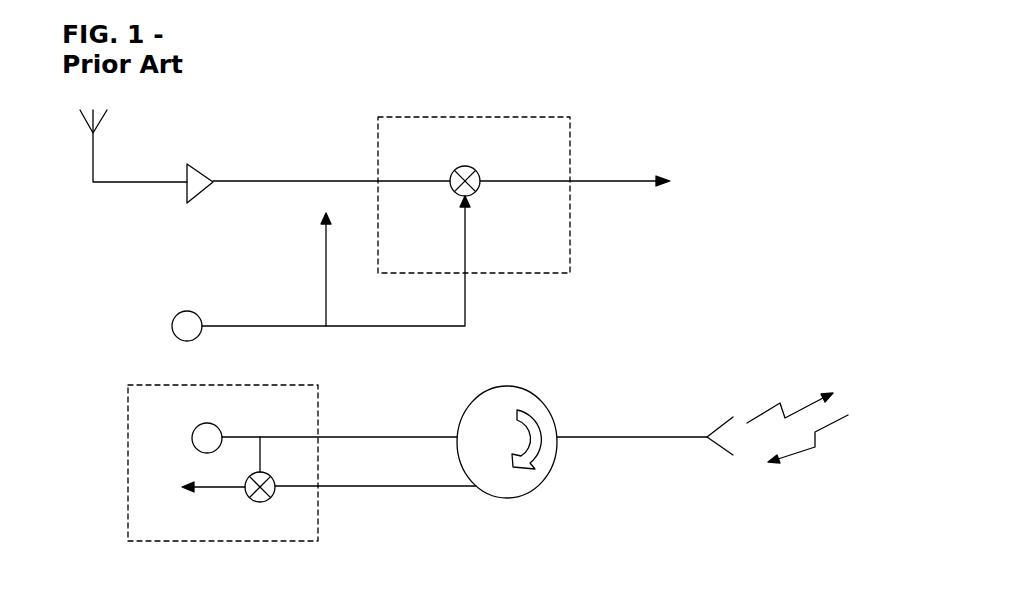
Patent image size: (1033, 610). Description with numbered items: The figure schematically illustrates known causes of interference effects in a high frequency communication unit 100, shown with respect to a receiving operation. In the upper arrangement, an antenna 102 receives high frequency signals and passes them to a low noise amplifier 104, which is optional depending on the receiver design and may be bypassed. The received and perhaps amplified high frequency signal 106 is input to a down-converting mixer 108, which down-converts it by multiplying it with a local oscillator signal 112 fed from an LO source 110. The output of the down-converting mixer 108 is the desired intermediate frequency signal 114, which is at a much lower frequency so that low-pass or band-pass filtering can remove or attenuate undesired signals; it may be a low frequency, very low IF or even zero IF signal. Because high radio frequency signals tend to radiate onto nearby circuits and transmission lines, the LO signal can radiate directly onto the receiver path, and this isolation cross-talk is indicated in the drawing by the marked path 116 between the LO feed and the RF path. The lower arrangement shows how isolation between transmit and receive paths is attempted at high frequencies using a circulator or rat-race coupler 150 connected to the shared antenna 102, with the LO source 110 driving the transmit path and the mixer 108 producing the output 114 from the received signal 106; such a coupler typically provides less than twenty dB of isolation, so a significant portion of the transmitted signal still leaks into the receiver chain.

The high frequency communication unit 100 is at (277, 66).
The antenna 102 is at (93, 158).
The low noise amplifier 104 is at (197, 165).
The high frequency signal 106 is at (242, 180).
The down-converting mixer 108 is at (473, 158).
The LO source 110 is at (173, 317).
The local oscillator (LO) signal 112 is at (465, 292).
The intermediate frequency (IF) signal 114 is at (612, 183).
The isolation / crosstalk path 116 is at (322, 250).
The rat-race coupler 150 is at (493, 498).